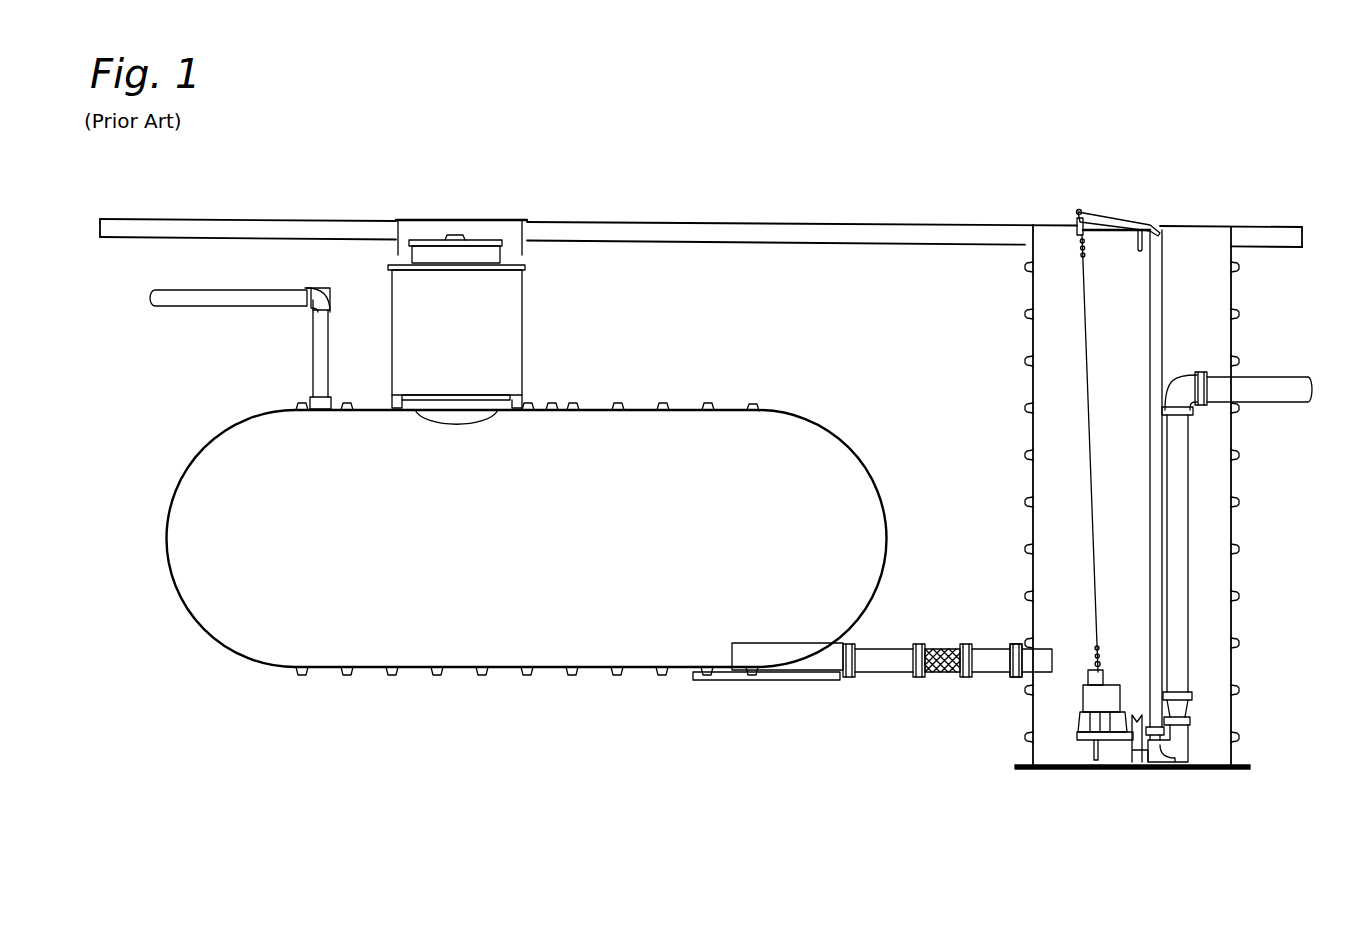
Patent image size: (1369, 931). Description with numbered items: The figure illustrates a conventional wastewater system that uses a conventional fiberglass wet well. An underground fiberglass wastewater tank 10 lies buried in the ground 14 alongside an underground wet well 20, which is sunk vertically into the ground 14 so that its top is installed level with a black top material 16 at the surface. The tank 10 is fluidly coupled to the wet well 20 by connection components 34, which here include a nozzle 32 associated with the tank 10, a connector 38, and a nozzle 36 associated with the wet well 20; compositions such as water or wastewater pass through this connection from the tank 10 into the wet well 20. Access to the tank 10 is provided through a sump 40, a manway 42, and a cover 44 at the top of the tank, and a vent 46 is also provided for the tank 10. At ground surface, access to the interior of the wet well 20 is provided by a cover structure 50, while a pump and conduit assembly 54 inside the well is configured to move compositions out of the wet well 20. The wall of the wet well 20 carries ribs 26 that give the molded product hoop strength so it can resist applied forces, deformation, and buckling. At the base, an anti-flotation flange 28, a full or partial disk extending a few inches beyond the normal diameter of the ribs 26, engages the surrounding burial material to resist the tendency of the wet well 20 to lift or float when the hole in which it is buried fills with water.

The underground fiberglass wastewater tank 10 is at (255, 660).
The ground 14 is at (757, 320).
The black top material 16 is at (835, 225).
The underground wet well 20 is at (1245, 334).
The ribs 26 is at (1025, 455).
The anti-flotation flange 28 is at (1238, 769).
The nozzle 32 is at (785, 643).
The connection components 34 is at (930, 697).
The nozzle 36 is at (1022, 677).
The connector 38 is at (938, 649).
The sump 40 is at (532, 303).
The manway 42 is at (478, 393).
The cover 44 is at (483, 240).
The vent 46 is at (197, 307).
The cover structure 50 is at (1124, 200).
The pump and conduit assembly 54 is at (1196, 607).